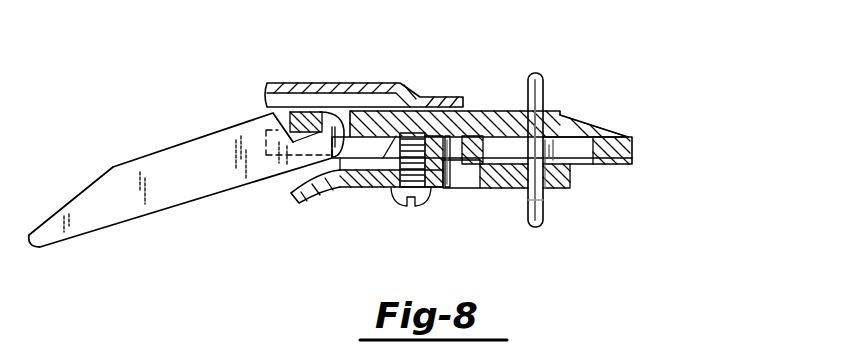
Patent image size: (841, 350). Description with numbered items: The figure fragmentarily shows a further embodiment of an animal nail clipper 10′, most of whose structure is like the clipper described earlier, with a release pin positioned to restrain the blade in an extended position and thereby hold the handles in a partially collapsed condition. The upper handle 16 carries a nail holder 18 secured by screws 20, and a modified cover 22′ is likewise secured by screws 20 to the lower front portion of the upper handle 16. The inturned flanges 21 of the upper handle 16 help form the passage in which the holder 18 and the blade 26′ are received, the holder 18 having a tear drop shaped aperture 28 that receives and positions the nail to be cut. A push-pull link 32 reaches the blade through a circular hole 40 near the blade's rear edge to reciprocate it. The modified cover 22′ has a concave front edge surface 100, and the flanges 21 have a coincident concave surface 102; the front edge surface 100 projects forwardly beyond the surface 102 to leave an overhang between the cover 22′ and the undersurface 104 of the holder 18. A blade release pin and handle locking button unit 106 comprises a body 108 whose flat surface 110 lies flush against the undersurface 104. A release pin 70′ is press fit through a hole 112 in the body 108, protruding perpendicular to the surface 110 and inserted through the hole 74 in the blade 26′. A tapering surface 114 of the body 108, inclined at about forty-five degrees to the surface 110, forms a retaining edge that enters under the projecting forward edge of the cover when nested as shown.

The clipper 10′ is at (241, 64).
The upper handle 16 is at (290, 78).
The circular hole 40 is at (350, 110).
The blade 26′ is at (478, 104).
The hole 74 is at (531, 114).
The flat surface 110 is at (550, 162).
The tear drop shaped aperture 28 is at (598, 132).
The nail holder 18 is at (640, 153).
The undersurface 104 is at (617, 167).
The blade release pin and handle locking button unit 106 is at (580, 191).
The hole 112 is at (553, 189).
The release pin 70′ is at (538, 226).
The body 108 is at (520, 189).
The concave front edge surface 100 is at (455, 186).
The tapering surface 114 is at (462, 184).
The concave surface 102 is at (445, 193).
The screws 20 is at (400, 207).
The modified cover 22′ is at (346, 194).
The inturned flanges 21 is at (300, 201).
The push-pull link 32 is at (162, 118).